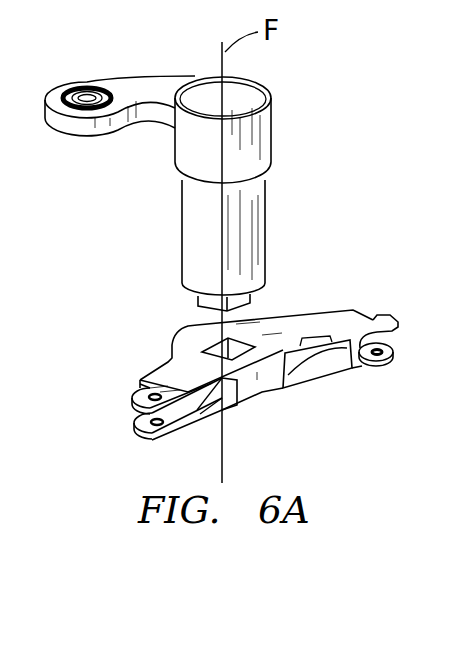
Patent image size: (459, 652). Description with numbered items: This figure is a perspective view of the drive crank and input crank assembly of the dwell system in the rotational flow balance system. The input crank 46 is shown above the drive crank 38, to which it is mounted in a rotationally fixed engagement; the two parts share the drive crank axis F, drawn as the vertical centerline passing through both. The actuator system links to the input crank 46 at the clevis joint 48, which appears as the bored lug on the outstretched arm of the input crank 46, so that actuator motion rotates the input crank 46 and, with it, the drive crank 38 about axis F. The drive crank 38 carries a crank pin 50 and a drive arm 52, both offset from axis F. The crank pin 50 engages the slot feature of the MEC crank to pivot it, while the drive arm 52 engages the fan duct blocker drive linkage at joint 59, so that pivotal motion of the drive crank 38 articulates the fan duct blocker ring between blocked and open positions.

The drive crank 38 is at (263, 402).
The input crank 46 is at (185, 218).
The clevis joint 48 is at (83, 92).
The crank pin 50 is at (143, 410).
The drive arm 52 is at (310, 317).
The joint 59 is at (385, 320).